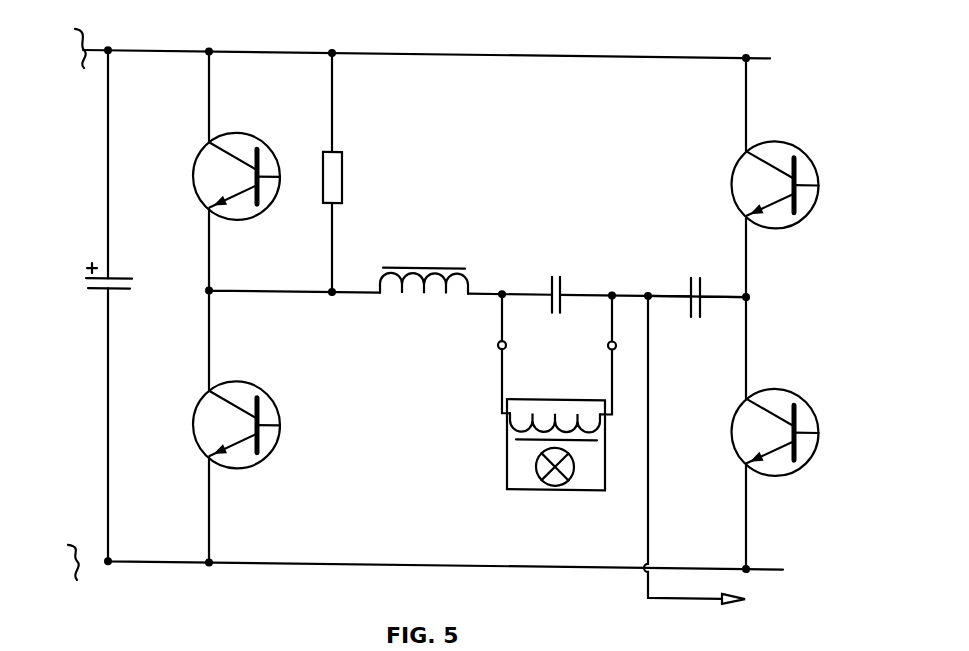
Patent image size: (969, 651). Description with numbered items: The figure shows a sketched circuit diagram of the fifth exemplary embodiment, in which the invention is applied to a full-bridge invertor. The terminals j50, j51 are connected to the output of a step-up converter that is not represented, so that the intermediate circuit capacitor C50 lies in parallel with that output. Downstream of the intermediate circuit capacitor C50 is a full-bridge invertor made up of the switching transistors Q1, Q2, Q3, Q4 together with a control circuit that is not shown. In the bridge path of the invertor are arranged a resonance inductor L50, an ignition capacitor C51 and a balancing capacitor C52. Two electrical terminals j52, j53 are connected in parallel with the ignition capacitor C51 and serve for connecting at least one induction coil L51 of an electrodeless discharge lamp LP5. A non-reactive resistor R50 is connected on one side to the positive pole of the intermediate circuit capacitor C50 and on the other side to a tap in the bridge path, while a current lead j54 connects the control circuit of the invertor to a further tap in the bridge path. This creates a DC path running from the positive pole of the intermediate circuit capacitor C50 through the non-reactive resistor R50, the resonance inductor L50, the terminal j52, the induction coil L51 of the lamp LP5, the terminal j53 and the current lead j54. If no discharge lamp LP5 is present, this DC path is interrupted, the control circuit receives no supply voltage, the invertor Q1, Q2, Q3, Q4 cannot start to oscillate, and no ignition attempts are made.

The terminal j50 is at (80, 34).
The terminal j51 is at (78, 579).
The electrical terminal j52 is at (485, 354).
The electrical terminal j53 is at (593, 355).
The current lead j54 is at (715, 454).
The switching transistor Q1 is at (236, 163).
The switching transistor Q2 is at (236, 408).
The switching transistor Q3 is at (775, 170).
The switching transistor Q4 is at (775, 416).
The non-reactive resistor R50 is at (358, 178).
The intermediate circuit capacitor C50 is at (122, 292).
The ignition capacitor C51 is at (555, 282).
The balancing capacitor C52 is at (697, 282).
The resonance inductor L50 is at (424, 267).
The induction coil L51 is at (510, 422).
The electrodeless discharge lamp LP5 is at (556, 460).